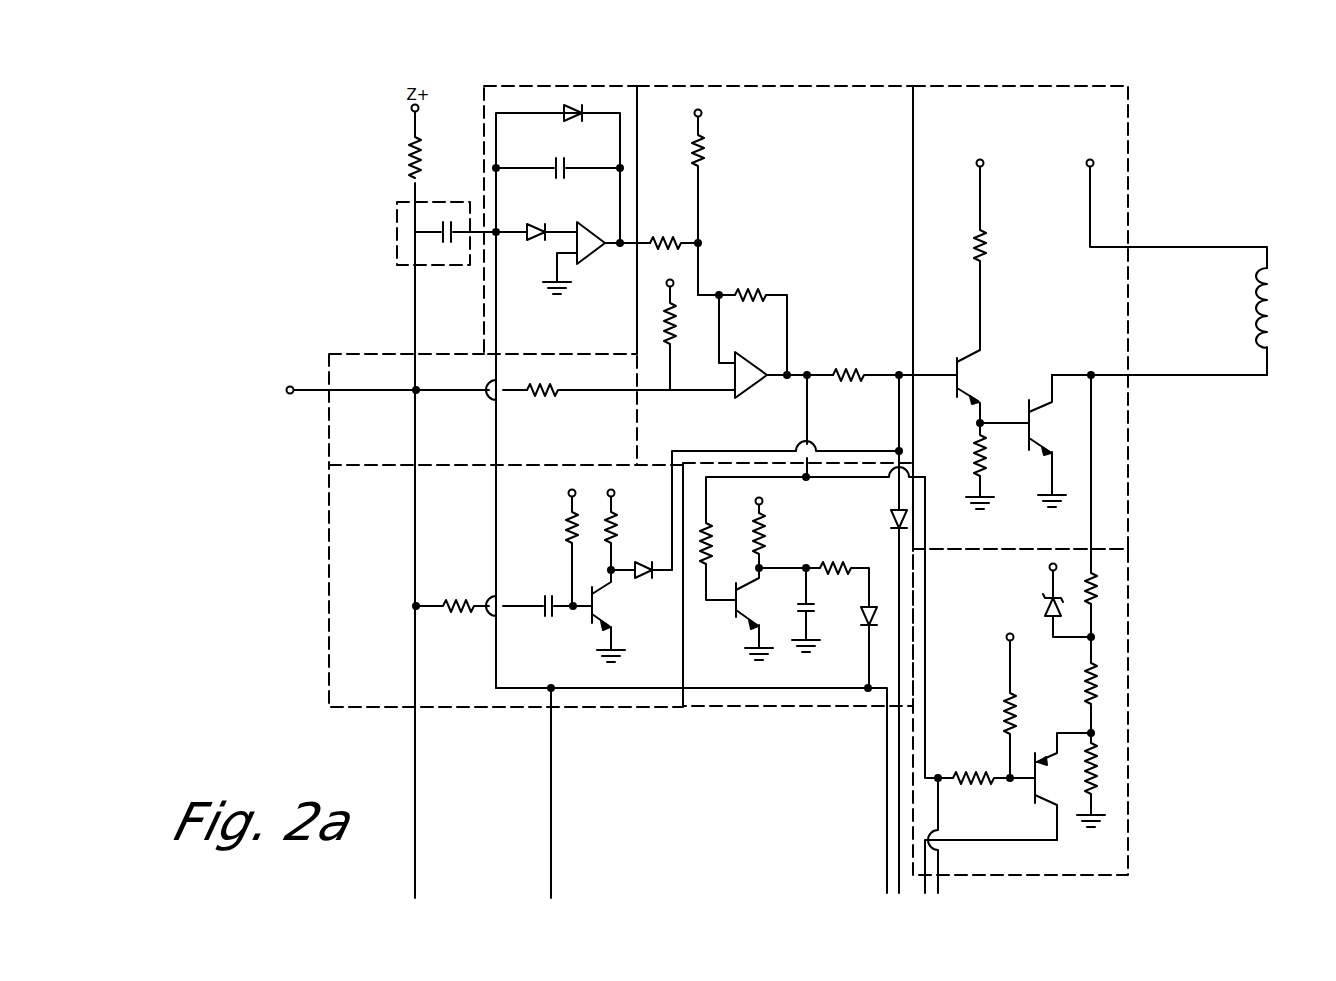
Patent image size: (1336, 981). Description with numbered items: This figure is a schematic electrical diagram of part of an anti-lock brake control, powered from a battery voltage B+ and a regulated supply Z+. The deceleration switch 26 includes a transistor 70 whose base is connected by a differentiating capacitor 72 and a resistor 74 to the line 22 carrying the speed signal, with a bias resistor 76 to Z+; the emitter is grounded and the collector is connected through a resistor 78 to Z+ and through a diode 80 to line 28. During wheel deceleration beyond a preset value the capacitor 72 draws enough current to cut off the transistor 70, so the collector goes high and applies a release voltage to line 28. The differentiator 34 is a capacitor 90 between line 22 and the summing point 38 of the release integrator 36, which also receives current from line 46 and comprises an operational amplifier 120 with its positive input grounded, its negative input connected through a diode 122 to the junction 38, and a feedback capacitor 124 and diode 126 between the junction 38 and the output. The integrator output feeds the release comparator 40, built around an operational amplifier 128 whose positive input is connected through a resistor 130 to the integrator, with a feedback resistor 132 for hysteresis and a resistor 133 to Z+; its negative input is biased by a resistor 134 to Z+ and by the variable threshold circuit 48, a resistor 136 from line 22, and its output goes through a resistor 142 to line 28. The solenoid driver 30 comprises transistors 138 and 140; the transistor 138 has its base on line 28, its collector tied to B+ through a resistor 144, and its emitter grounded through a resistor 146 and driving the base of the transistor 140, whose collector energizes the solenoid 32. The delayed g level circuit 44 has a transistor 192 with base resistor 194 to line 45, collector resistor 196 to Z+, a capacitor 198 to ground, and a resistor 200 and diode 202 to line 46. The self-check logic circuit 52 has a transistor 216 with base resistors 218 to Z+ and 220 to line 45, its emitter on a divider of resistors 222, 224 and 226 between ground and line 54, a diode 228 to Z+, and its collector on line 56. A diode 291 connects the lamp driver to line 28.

The line 22 is at (302, 388).
The deceleration switch 26 is at (329, 560).
The line 28 is at (707, 450).
The solenoid driver 30 is at (1128, 170).
The solenoid 32 is at (1268, 283).
The differentiator 34 is at (397, 245).
The release integrator 36 is at (551, 85).
The summing point 38 is at (498, 236).
The release comparator 40 is at (834, 86).
The delayed g level circuit 44 is at (790, 706).
The line 45 is at (810, 398).
The line 46 is at (497, 318).
The variable threshold circuit 48 is at (395, 355).
The self-check logic circuit 52 is at (1128, 645).
The line 54 is at (1093, 372).
The line 56 is at (960, 838).
The transistor 70 is at (590, 612).
The differentiating capacitor 72 is at (540, 612).
The resistor 74 is at (462, 612).
The bias resistor 76 is at (570, 520).
The resistor 78 is at (613, 530).
The diode 80 is at (645, 578).
The capacitor 90 is at (452, 222).
The operational amplifier 120 is at (595, 230).
The diode 122 is at (530, 225).
The feedback capacitor 124 is at (565, 168).
The diode 126 is at (565, 118).
The operational amplifier 128 is at (752, 362).
The resistor 130 is at (662, 238).
The feedback resistor 132 is at (755, 290).
The resistor 133 is at (702, 147).
The bias resistor 134 is at (672, 320).
The resistor 136 is at (560, 395).
The transistor 138 is at (955, 370).
The transistor 140 is at (1022, 400).
The resistor 142 is at (855, 370).
The resistor 144 is at (982, 240).
The resistor 146 is at (977, 460).
The transistor 192 is at (735, 607).
The resistor 194 is at (708, 540).
The resistor 196 is at (762, 540).
The capacitor 198 is at (812, 608).
The resistor 200 is at (835, 565).
The diode 202 is at (865, 625).
The transistor 216 is at (1032, 760).
The resistor 218 is at (1012, 705).
The resistor 220 is at (962, 775).
The resistor 222 is at (1093, 590).
The resistor 224 is at (1093, 685).
The resistor 226 is at (1093, 770).
The diode 228 is at (1045, 607).
The diode 291 is at (895, 508).